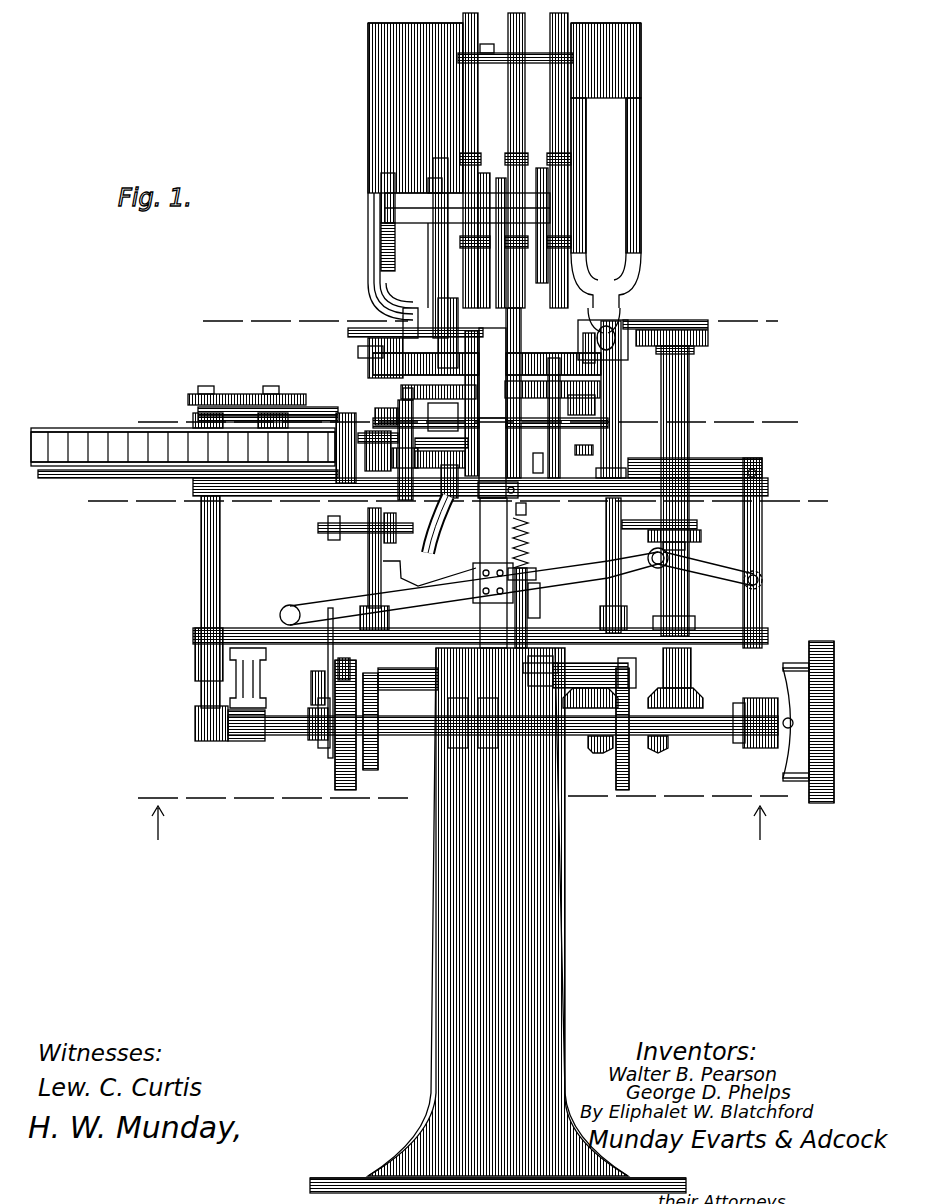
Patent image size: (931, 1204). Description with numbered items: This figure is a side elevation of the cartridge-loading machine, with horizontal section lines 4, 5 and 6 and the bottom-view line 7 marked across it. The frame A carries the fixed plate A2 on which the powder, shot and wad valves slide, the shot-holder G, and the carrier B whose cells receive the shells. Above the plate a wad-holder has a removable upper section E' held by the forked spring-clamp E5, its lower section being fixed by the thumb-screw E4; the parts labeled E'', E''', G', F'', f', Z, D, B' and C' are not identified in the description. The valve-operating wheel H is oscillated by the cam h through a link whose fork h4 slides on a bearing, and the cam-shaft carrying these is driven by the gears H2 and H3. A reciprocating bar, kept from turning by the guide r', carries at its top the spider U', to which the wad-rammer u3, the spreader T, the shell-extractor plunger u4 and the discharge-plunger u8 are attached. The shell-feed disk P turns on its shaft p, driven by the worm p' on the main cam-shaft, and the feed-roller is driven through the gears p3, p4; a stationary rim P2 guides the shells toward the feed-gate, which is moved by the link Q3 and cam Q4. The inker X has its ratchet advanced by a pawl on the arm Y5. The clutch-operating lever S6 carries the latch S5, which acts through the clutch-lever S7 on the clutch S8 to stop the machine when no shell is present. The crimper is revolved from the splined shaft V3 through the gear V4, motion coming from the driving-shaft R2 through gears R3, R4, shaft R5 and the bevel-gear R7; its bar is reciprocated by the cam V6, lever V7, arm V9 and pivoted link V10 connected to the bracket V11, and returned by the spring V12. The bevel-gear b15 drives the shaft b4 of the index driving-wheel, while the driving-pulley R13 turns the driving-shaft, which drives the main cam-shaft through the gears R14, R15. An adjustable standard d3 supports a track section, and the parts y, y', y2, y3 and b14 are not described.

The section line 4 is at (492, 322).
The section line 5 is at (469, 423).
The section line 6 is at (450, 499).
The bottom-view line 7 is at (462, 814).
The frame A is at (420, 78).
The shot-holder G is at (606, 165).
The forked spring-clamp E5 is at (549, 48).
The removable section E' is at (453, 160).
The rod E'' is at (524, 160).
The rod E''' is at (578, 160).
The spider U' is at (467, 243).
The spreader T is at (375, 270).
The shell-extractor plunger u4 is at (427, 290).
The wad-rammer u3 is at (540, 255).
The discharge-plunger u8 is at (432, 325).
The neck G' is at (622, 309).
The set-screw or thumb-screw E4 is at (612, 308).
The fork h4 is at (692, 314).
The cam h is at (700, 330).
The valve-operating wheel H is at (680, 590).
The plate F'' is at (404, 350).
The lug f' is at (364, 354).
The plate A2 is at (368, 360).
The arm Y5 is at (394, 386).
The block Z is at (425, 408).
The bar D is at (500, 420).
The gear V4 is at (485, 402).
The splined shaft V3 is at (500, 403).
The carrier B is at (618, 399).
The bracket B' is at (541, 418).
The bearing C' is at (498, 481).
The clutch-lever S7 is at (755, 608).
The gear p3 is at (186, 388).
The gear p4 is at (256, 386).
The stationary rim or guard P2 is at (183, 447).
The shell-feed disk P is at (128, 470).
The inker X is at (340, 450).
The shaft p is at (218, 602).
The rod y2 is at (316, 520).
The pawl or latch S5 is at (362, 560).
The lug y3 is at (386, 535).
The connecting-link Q3 is at (452, 526).
The adjustable standard d3 is at (429, 573).
The clutch-operating lever S6 is at (517, 586).
The pivoted link V10 is at (508, 606).
The spring V12 is at (525, 540).
The bracket V11 is at (522, 582).
The guide r' is at (547, 600).
The shaft b4 is at (608, 568).
The cam Q4 is at (690, 530).
The rod y' is at (312, 683).
The connecting-gear R15 is at (342, 660).
The gear R4 is at (385, 670).
The worm p' is at (216, 732).
The driving-shaft R2 is at (684, 730).
The collar y is at (311, 738).
The connecting-gear R14 is at (336, 780).
The gear R3 is at (372, 752).
The shaft R5 is at (455, 728).
The bevel-gear R7 is at (481, 728).
The arm V9 is at (545, 660).
The lever V7 is at (632, 670).
The bevel-gear b15 is at (574, 700).
The bevel gear b14 is at (592, 740).
The gear H2 is at (655, 688).
The gear H3 is at (653, 751).
The cam V6 is at (622, 775).
The clutch S8 is at (757, 740).
The driving-pulley R13 is at (810, 795).